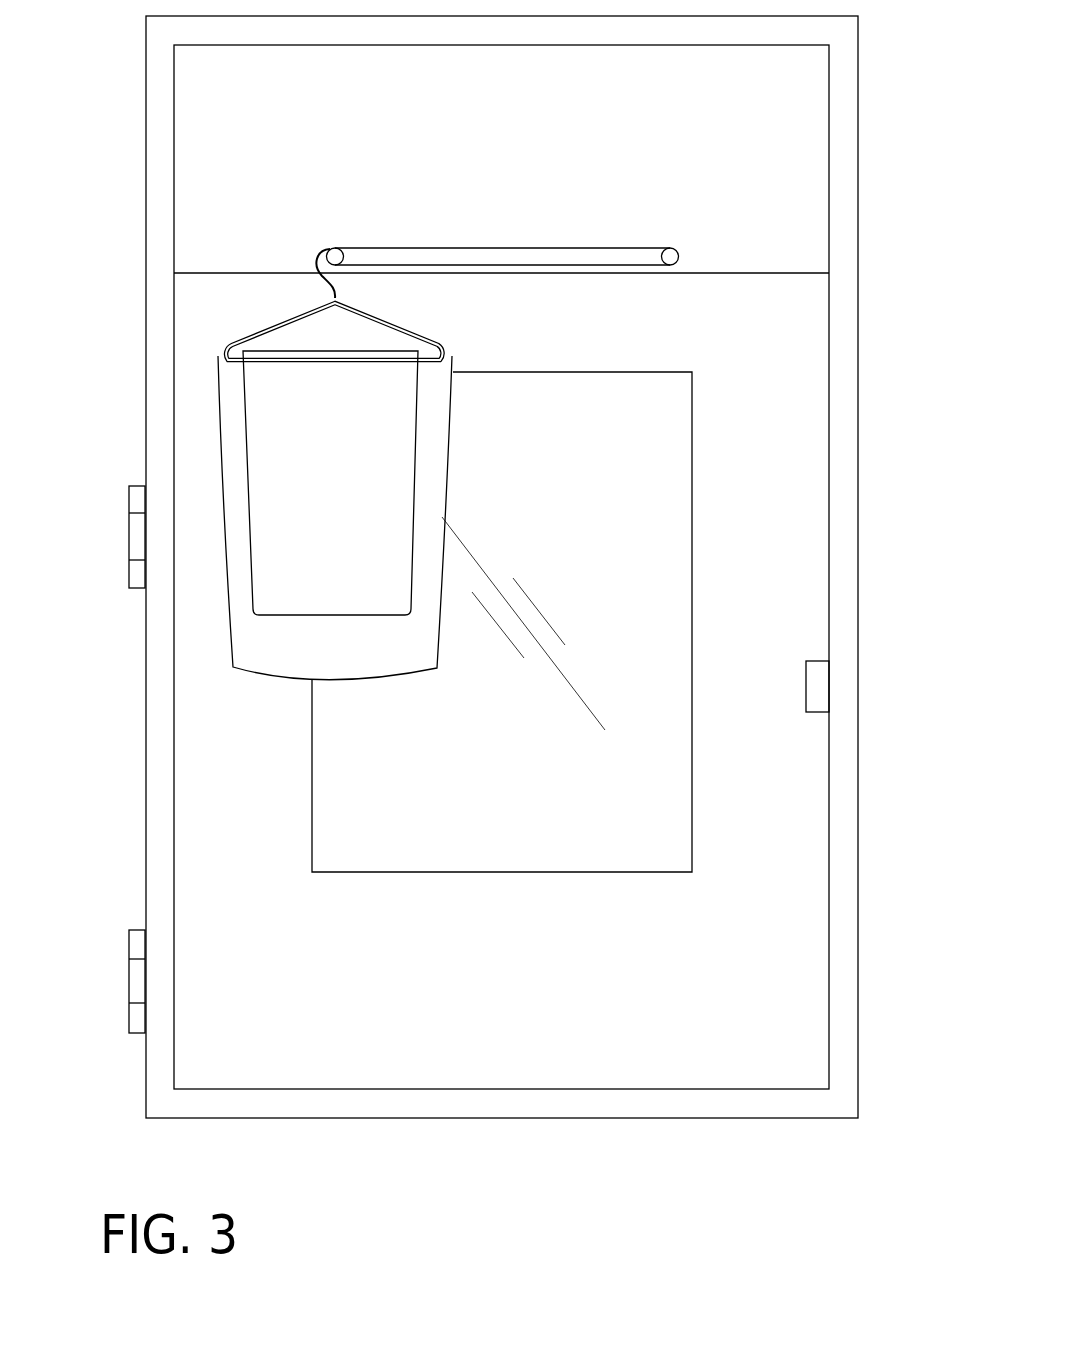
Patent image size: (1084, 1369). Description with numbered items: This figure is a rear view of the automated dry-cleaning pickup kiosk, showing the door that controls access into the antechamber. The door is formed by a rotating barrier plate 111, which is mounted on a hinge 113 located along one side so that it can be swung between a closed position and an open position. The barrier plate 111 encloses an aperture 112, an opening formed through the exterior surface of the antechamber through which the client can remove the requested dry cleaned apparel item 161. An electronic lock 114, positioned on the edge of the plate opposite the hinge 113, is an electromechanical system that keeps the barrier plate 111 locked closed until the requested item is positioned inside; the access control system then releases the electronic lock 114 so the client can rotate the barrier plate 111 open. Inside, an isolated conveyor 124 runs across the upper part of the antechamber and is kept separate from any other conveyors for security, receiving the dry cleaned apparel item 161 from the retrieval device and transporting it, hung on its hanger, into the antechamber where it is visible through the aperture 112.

The barrier plate 111 is at (785, 1025).
The aperture 112 is at (740, 275).
The hinge 113 is at (130, 980).
The electronic lock 114 is at (817, 698).
The isolated conveyor 124 is at (553, 257).
The dry cleaned apparel item 161 is at (286, 646).